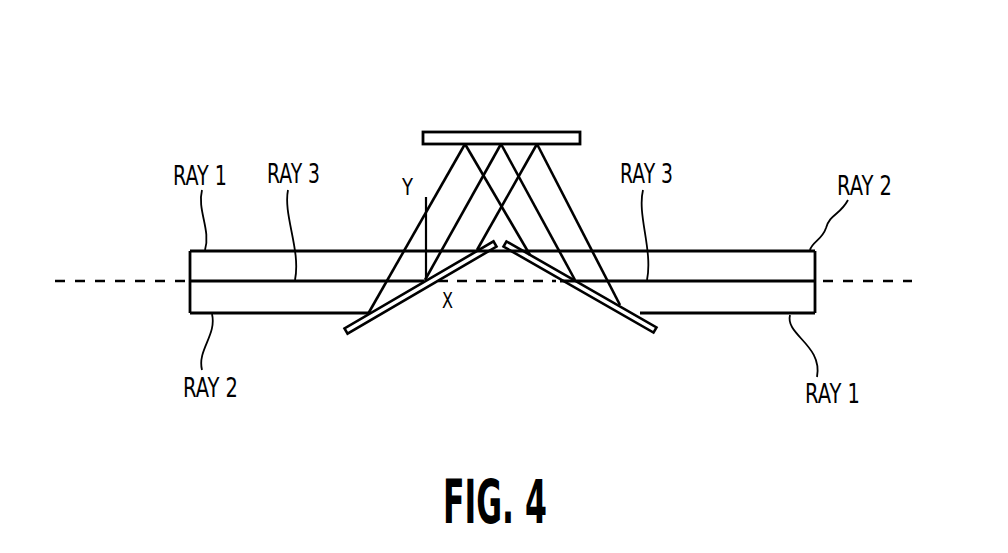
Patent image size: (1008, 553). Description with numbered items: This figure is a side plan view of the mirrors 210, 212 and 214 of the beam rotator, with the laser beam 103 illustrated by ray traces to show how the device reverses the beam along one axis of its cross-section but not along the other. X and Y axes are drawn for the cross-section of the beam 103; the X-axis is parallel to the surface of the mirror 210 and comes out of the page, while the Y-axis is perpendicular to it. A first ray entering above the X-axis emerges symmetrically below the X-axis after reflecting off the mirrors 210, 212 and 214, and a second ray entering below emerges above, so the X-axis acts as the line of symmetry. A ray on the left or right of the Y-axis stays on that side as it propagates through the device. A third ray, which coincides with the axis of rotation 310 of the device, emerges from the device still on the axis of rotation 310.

The beam 103 is at (716, 221).
The mirror 212 is at (502, 131).
The mirror 210 is at (377, 321).
The mirror 214 is at (627, 321).
The axis of rotation 310 is at (75, 283).